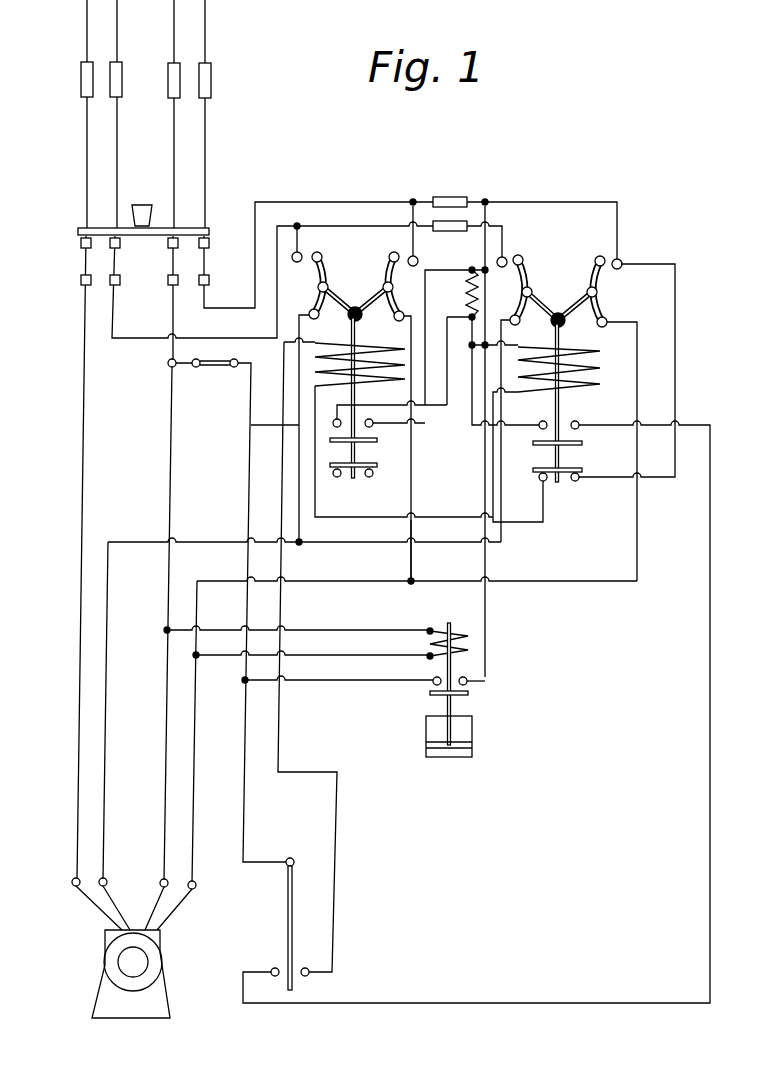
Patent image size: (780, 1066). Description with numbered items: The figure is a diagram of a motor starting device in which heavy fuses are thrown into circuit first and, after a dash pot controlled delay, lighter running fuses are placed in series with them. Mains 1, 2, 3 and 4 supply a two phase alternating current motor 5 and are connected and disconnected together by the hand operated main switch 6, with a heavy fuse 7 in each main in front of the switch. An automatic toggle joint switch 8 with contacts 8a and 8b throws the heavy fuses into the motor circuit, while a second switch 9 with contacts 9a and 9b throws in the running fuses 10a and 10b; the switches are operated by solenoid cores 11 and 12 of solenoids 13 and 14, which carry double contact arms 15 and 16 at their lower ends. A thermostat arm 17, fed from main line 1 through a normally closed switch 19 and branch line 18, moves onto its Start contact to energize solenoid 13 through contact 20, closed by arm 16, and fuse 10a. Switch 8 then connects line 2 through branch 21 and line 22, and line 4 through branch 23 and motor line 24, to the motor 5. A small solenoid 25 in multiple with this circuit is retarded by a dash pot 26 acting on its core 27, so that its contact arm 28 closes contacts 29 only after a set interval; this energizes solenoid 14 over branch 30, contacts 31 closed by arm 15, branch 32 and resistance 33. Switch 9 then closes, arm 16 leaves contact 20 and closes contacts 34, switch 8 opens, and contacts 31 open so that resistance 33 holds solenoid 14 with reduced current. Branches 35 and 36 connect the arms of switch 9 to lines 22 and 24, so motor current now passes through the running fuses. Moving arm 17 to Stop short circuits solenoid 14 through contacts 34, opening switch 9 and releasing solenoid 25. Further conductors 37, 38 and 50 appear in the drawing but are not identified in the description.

The main 1 is at (173, 44).
The main 2 is at (205, 33).
The main 3 is at (84, 35).
The main 4 is at (108, 30).
The motor 5 is at (100, 952).
The main switch 6 is at (110, 230).
The heavy fuse 7 is at (80, 90).
The automatic switch 8 is at (355, 416).
The switch contact 8a is at (409, 256).
The switch terminal 8b is at (303, 255).
The automatic switch 9 is at (569, 418).
The switch contact 9a is at (623, 260).
The switch contact 9b is at (507, 256).
The running fuse 10a is at (448, 197).
The running fuse 10b is at (458, 232).
The solenoid core 11 is at (350, 333).
The solenoid core 12 is at (562, 336).
The solenoid 13 is at (372, 368).
The solenoid 14 is at (595, 370).
The double contact arm 15 is at (374, 468).
The double contact arm 16 is at (582, 470).
The thermostat arm 17 is at (274, 967).
The branch line 18 is at (251, 480).
The switch 19 is at (203, 374).
The contact 20 is at (546, 483).
The branch 21 is at (416, 478).
The line 22 is at (196, 745).
The branch 23 is at (258, 423).
The motor line 24 is at (108, 726).
The solenoid 25 is at (445, 630).
The dash pot 26 is at (474, 737).
The solenoid core 27 is at (455, 672).
The contact arm 28 is at (470, 694).
The contacts 29 is at (430, 685).
The branch 30 is at (498, 570).
The contacts 31 is at (371, 414).
The branch 32 is at (465, 296).
The resistance 33 is at (478, 298).
The contacts 34 is at (582, 414).
The branch 35 is at (638, 396).
The branch 36 is at (504, 498).
The conductor 37 is at (440, 525).
The conductor 38 is at (677, 350).
The conductor 50 is at (307, 655).